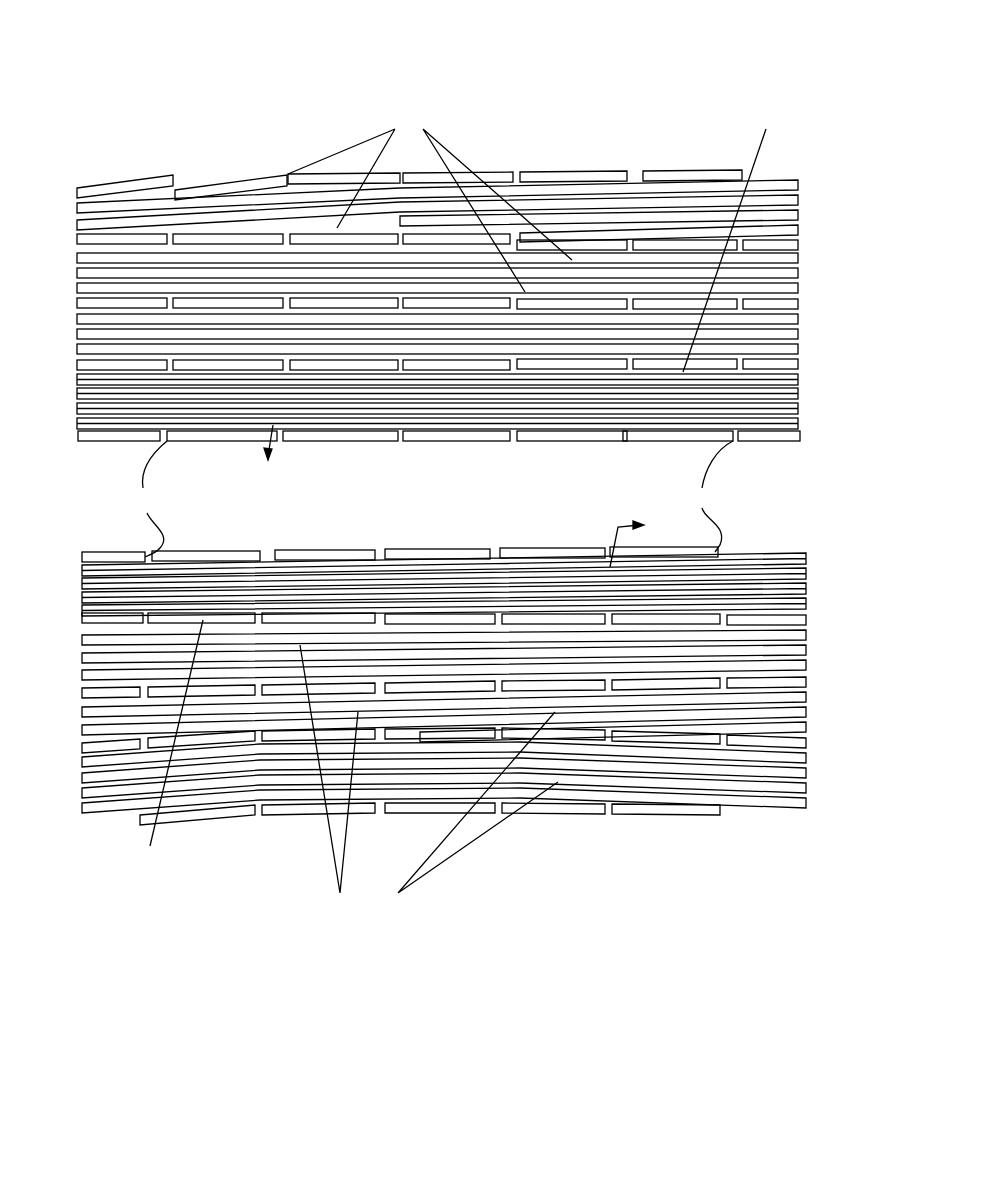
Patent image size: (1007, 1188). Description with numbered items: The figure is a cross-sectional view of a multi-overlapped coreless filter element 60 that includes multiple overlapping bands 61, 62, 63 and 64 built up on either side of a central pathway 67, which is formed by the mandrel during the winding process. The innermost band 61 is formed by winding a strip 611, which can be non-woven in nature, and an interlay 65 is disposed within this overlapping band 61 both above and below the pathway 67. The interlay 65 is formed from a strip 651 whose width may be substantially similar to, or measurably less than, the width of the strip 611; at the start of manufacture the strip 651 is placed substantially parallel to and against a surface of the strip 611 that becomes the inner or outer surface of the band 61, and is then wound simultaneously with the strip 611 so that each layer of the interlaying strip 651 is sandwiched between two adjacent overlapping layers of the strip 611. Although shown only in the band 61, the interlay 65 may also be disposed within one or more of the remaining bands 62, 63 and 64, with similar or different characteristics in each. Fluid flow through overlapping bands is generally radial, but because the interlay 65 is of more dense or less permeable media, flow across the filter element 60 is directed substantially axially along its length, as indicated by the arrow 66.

The multi-overlapped coreless filter element 60 is at (732, 82).
The band 61 is at (805, 372).
The band 62 is at (805, 305).
The band 63 is at (805, 243).
The band 64 is at (805, 180).
The interlay 65 is at (77, 423).
The arrow 66 is at (635, 373).
The pathway 67 is at (454, 496).
The strip 611 is at (99, 441).
The strip 651 is at (150, 499).